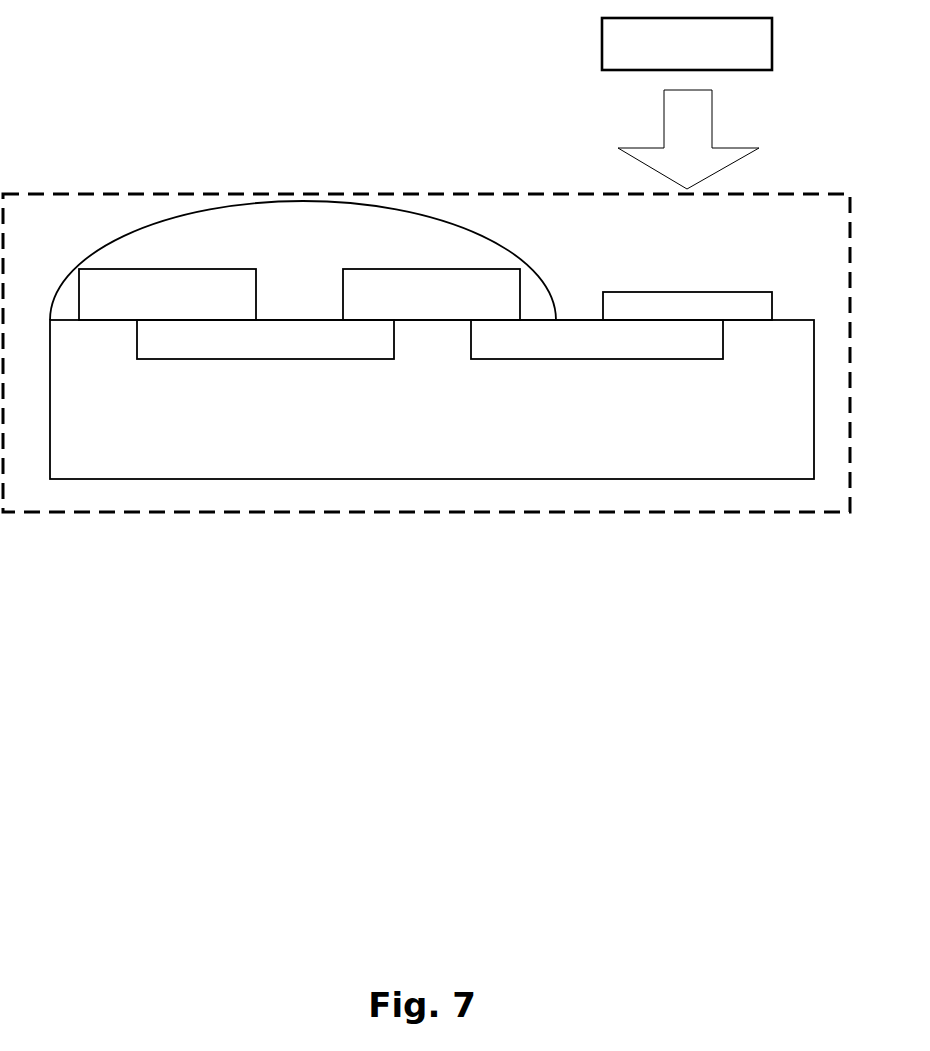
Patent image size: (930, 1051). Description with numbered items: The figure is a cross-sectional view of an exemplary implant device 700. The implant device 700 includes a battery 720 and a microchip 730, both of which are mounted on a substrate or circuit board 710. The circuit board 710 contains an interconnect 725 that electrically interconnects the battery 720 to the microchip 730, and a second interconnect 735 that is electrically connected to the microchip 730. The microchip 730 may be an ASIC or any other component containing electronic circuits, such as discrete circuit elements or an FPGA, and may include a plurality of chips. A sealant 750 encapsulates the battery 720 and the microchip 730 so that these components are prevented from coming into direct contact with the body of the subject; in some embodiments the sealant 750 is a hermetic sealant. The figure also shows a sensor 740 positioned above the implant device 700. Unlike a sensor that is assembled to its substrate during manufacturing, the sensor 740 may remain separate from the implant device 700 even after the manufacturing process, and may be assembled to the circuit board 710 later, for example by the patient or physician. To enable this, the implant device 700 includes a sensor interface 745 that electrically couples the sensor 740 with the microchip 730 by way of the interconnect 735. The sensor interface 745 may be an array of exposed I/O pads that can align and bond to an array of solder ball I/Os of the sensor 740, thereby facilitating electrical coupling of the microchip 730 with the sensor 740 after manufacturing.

The implant device 700 is at (245, 150).
The circuit board 710 is at (412, 410).
The battery 720 is at (148, 306).
The interconnect 725 is at (239, 354).
The microchip 730 is at (413, 306).
The interconnect 735 is at (571, 352).
The sensor 740 is at (668, 54).
The sensor interface 745 is at (668, 316).
The sealant 750 is at (283, 232).